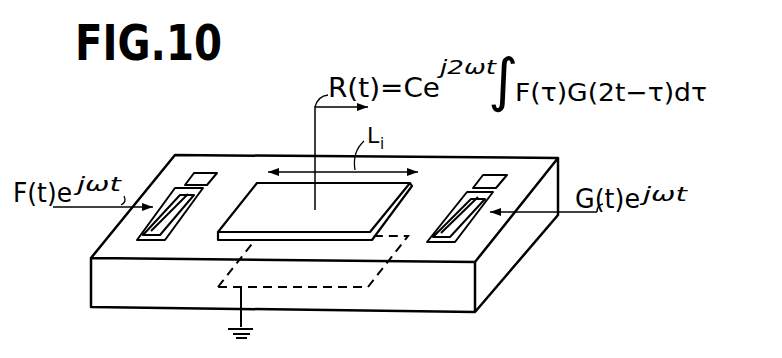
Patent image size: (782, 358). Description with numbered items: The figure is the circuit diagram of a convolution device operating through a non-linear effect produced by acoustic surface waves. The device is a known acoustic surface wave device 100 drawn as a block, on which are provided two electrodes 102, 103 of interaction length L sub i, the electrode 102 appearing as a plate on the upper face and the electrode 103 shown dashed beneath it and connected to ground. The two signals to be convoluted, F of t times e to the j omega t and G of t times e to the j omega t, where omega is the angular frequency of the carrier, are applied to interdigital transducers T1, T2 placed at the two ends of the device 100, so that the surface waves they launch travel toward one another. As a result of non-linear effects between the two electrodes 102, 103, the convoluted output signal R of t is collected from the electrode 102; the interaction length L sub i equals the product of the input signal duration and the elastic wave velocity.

The acoustic surface wave device 100 is at (515, 247).
The electrode 102 is at (258, 195).
The electrode 103 is at (347, 277).
The interdigital transducer T1 is at (190, 177).
The interdigital transducer T2 is at (487, 176).